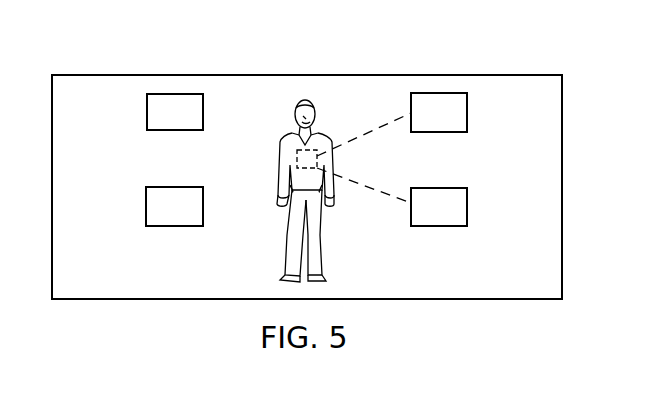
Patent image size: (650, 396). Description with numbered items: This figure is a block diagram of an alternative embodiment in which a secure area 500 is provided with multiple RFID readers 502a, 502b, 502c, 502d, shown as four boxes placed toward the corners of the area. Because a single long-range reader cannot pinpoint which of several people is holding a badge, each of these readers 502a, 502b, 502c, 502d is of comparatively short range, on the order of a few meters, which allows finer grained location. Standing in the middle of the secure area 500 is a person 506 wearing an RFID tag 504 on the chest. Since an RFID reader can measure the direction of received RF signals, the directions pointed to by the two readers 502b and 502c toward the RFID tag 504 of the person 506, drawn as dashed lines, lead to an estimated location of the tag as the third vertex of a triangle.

The secure area 500 is at (286, 74).
The RFID reader 502a is at (146, 112).
The RFID reader 502b is at (468, 112).
The RFID reader 502c is at (468, 206).
The RFID reader 502d is at (146, 206).
The RFID tag 504 is at (286, 146).
The person 506 is at (321, 248).